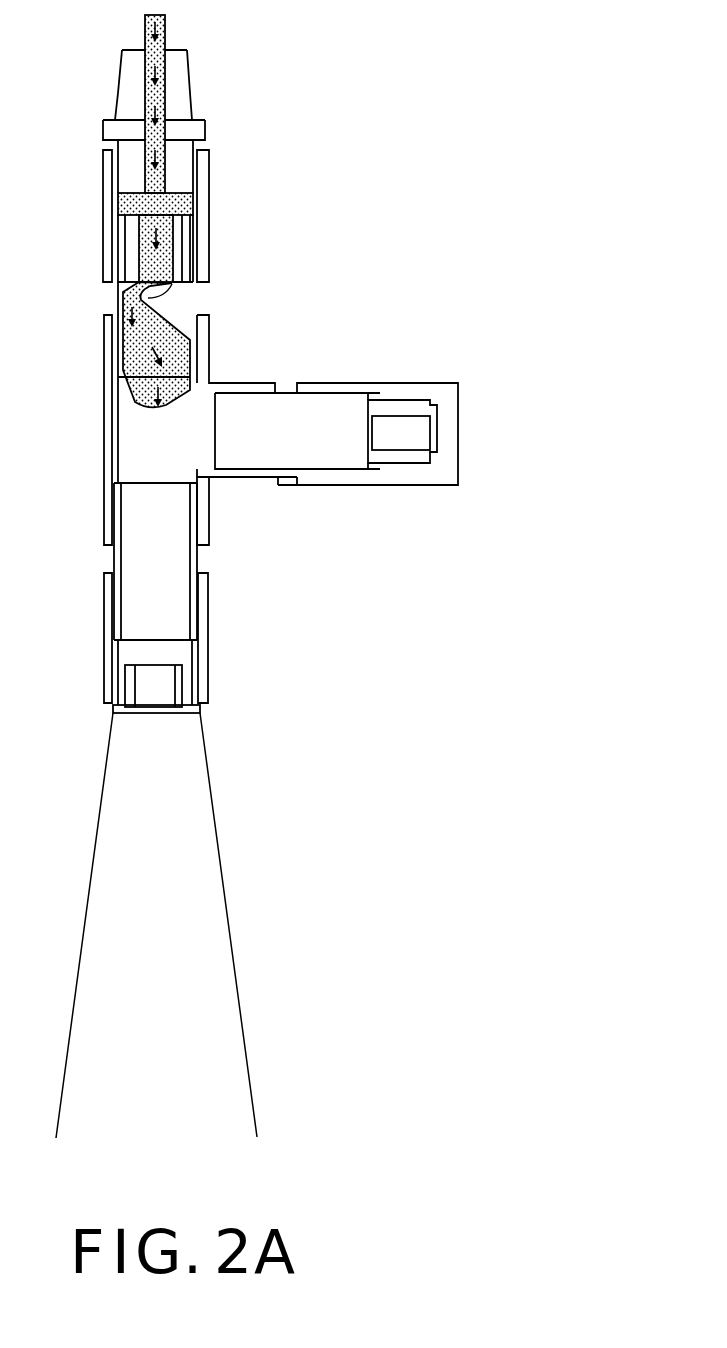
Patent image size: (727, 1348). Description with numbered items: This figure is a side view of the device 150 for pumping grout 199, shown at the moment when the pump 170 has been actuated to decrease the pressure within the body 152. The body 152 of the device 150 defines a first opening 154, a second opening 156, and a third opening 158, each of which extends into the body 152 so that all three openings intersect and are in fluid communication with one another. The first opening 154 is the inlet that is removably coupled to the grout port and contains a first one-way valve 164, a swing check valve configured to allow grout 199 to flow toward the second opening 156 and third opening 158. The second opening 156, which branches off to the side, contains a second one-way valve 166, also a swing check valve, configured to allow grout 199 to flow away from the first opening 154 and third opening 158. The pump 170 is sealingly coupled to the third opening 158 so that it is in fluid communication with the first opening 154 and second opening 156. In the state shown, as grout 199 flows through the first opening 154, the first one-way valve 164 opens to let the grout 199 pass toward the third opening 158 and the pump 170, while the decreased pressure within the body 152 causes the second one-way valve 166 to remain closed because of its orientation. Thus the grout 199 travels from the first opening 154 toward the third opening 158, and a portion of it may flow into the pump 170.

The device for pumping grout 150 is at (537, 120).
The body 152 is at (258, 323).
The first opening 154 is at (108, 211).
The second opening 156 is at (334, 403).
The third opening 158 is at (178, 618).
The first one-way valve 164 is at (186, 263).
The second one-way valve 166 is at (405, 463).
The pump 170 is at (277, 977).
The grout 199 is at (143, 343).